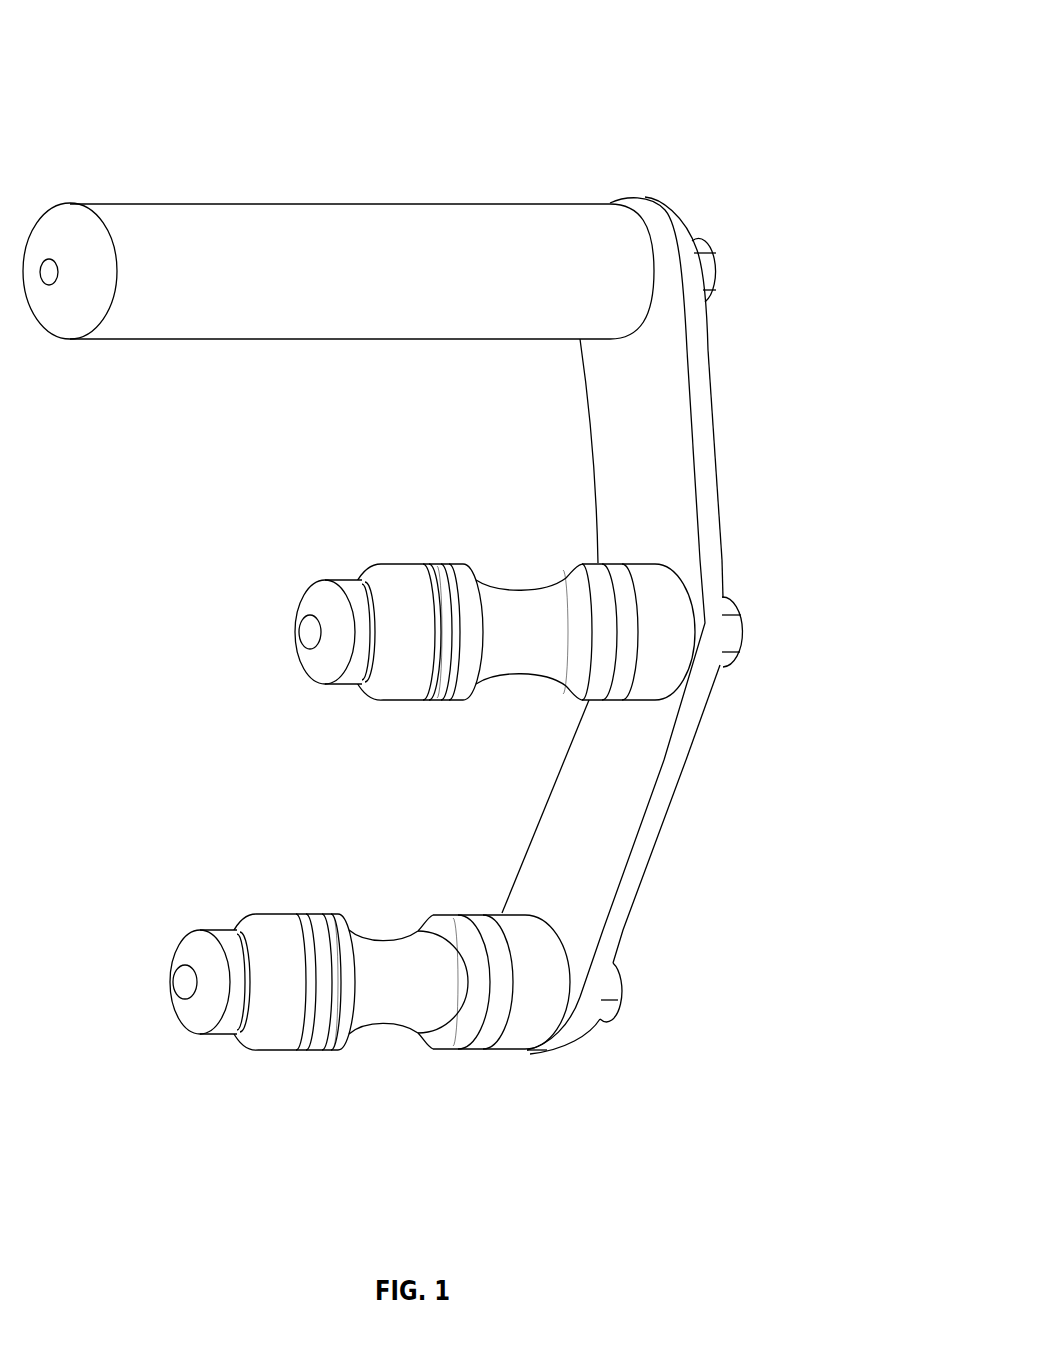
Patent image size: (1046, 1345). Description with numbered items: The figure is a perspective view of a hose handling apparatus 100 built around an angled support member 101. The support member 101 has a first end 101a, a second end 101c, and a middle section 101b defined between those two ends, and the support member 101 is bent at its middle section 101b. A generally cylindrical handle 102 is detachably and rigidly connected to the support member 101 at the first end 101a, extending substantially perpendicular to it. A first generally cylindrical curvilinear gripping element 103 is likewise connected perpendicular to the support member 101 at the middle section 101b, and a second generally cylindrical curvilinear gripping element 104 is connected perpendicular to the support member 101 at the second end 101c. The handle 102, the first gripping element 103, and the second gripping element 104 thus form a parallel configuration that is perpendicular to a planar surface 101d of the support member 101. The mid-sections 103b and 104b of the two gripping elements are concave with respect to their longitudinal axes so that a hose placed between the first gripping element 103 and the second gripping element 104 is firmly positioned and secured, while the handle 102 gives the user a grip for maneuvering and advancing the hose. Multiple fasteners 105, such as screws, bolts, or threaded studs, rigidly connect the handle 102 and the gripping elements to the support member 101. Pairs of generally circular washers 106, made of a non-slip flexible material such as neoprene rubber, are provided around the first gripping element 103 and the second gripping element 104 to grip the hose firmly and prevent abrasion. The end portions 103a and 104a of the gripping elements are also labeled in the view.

The hose handling apparatus 100 is at (686, 66).
The support member 101 is at (600, 631).
The first end 101a is at (698, 209).
The middle section 101b is at (714, 657).
The second end 101c is at (612, 1041).
The planar surface 101d is at (616, 442).
The generally cylindrical handle 102 is at (313, 202).
The first generally cylindrical curvilinear gripping element 103 is at (448, 622).
The end knob of upper roller 103a is at (285, 603).
The mid-section of the first gripping element 103b is at (515, 673).
The second generally cylindrical curvilinear gripping element 104 is at (332, 934).
The end knob of lower roller 104a is at (155, 952).
The mid-section of the second gripping element 104b is at (385, 930).
The fasteners 105 is at (720, 291).
The generally circular washers 106 is at (563, 569).